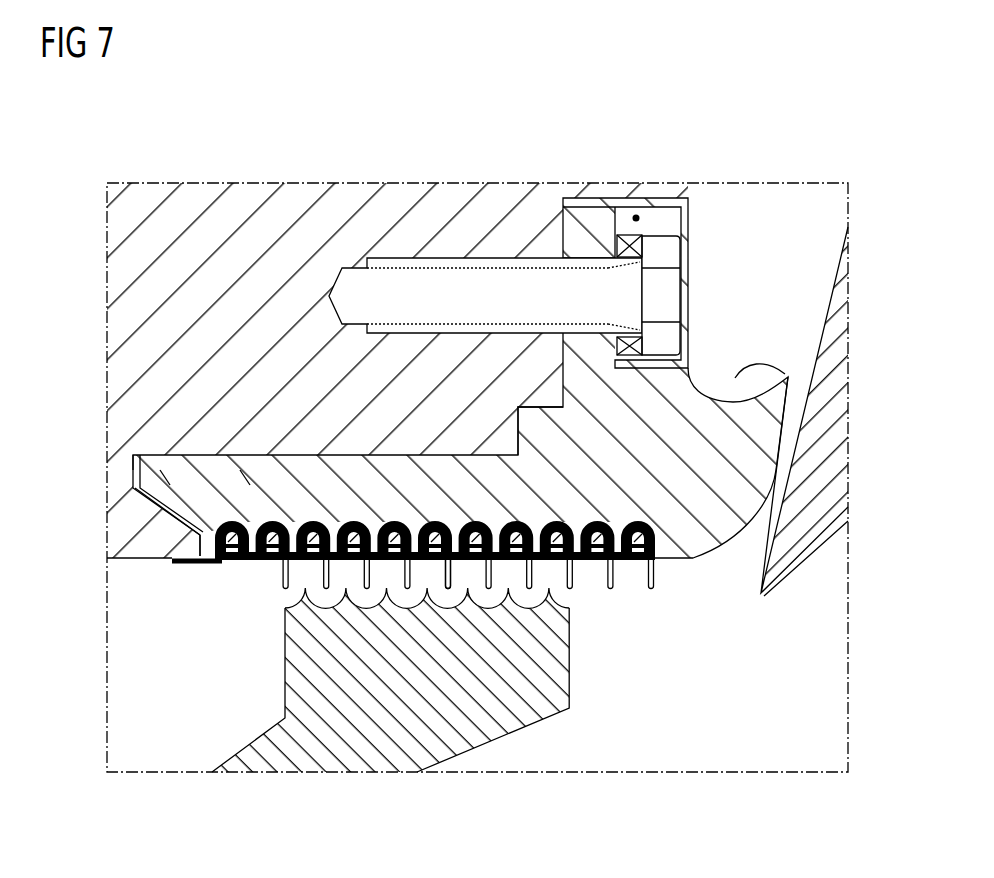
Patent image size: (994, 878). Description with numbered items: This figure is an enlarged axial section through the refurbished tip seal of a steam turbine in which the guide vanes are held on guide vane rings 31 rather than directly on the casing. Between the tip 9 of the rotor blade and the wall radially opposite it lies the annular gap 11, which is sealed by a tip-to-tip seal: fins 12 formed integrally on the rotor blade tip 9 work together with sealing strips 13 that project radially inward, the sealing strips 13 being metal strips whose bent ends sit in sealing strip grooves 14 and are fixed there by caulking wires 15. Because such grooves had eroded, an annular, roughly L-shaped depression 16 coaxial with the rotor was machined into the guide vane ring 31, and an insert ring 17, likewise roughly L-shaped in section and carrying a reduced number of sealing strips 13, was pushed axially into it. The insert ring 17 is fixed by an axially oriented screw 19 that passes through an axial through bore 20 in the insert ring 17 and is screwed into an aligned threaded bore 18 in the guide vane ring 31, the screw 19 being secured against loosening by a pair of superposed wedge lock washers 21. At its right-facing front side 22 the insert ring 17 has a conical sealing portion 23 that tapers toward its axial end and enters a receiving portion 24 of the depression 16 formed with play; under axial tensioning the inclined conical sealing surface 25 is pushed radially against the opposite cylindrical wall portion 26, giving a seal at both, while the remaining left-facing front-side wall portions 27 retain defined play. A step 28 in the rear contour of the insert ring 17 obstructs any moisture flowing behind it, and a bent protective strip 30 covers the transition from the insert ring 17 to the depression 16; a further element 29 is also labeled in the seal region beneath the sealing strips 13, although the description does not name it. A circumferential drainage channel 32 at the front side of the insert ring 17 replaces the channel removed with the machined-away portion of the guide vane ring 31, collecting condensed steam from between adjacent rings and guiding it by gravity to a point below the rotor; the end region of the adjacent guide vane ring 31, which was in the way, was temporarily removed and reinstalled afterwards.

The rotor blade tip 9 is at (335, 745).
The annular gap 11 is at (400, 578).
The fin 12 is at (520, 598).
The sealing strip 13 is at (285, 572).
The sealing strip groove 14 is at (198, 546).
The caulking wire 15 is at (230, 568).
The depression 16 is at (300, 468).
The insert ring 17 is at (446, 428).
The threaded bore 18 is at (483, 258).
The screw 19 is at (668, 292).
The through bore 20 is at (680, 238).
The wedge lock washer 21 is at (636, 215).
The front side 22 is at (133, 476).
The conical sealing portion 23 is at (165, 478).
The receiving portion 24 is at (133, 457).
The conical sealing surface 25 is at (170, 513).
The wall portion 26 is at (245, 472).
The front-side wall portion 27 is at (565, 240).
The step 28 is at (530, 419).
The spring finger 29 is at (460, 578).
The protective strip 30 is at (190, 570).
The guide vane ring 31 is at (826, 438).
The drainage channel 32 is at (790, 375).